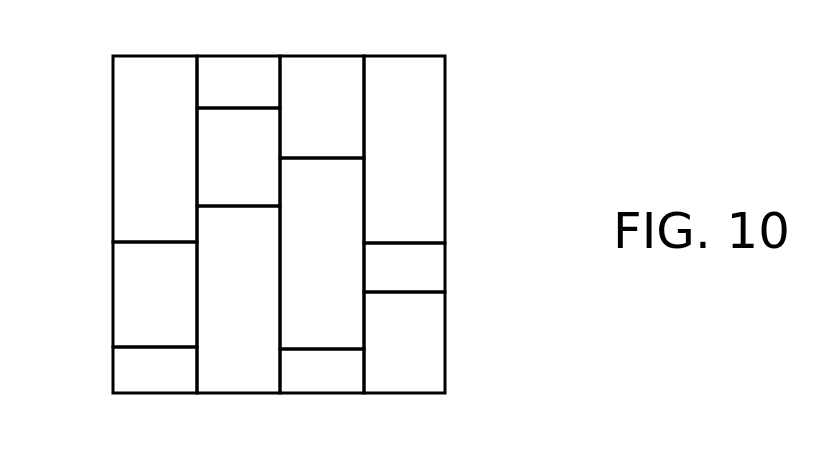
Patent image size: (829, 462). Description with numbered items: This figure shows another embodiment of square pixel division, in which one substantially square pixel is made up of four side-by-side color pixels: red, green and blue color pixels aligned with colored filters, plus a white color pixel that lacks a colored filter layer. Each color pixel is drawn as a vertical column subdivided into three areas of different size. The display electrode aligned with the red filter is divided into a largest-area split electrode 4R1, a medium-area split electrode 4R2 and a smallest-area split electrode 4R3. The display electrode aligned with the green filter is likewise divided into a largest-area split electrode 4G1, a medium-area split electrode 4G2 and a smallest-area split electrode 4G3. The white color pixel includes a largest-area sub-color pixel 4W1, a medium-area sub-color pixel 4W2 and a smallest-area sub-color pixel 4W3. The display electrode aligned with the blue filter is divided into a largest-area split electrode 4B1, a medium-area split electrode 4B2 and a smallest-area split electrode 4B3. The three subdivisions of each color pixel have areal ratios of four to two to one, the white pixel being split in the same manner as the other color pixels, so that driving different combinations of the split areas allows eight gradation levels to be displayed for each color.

The largest-area split electrode 4R1 is at (130, 152).
The medium-area split electrode 4R2 is at (130, 302).
The smallest-area split electrode 4R3 is at (122, 377).
The largest-area split electrode 4G1 is at (237, 370).
The medium-area split electrode 4G2 is at (240, 127).
The smallest-area split electrode 4G3 is at (222, 78).
The largest-area sub-color pixel 4W1 is at (302, 335).
The medium-area sub-color pixel 4W2 is at (335, 73).
The smallest-area sub-color pixel 4W3 is at (341, 380).
The largest-area split electrode 4B1 is at (430, 147).
The medium-area split electrode 4B2 is at (435, 350).
The smallest-area split electrode 4B3 is at (433, 270).